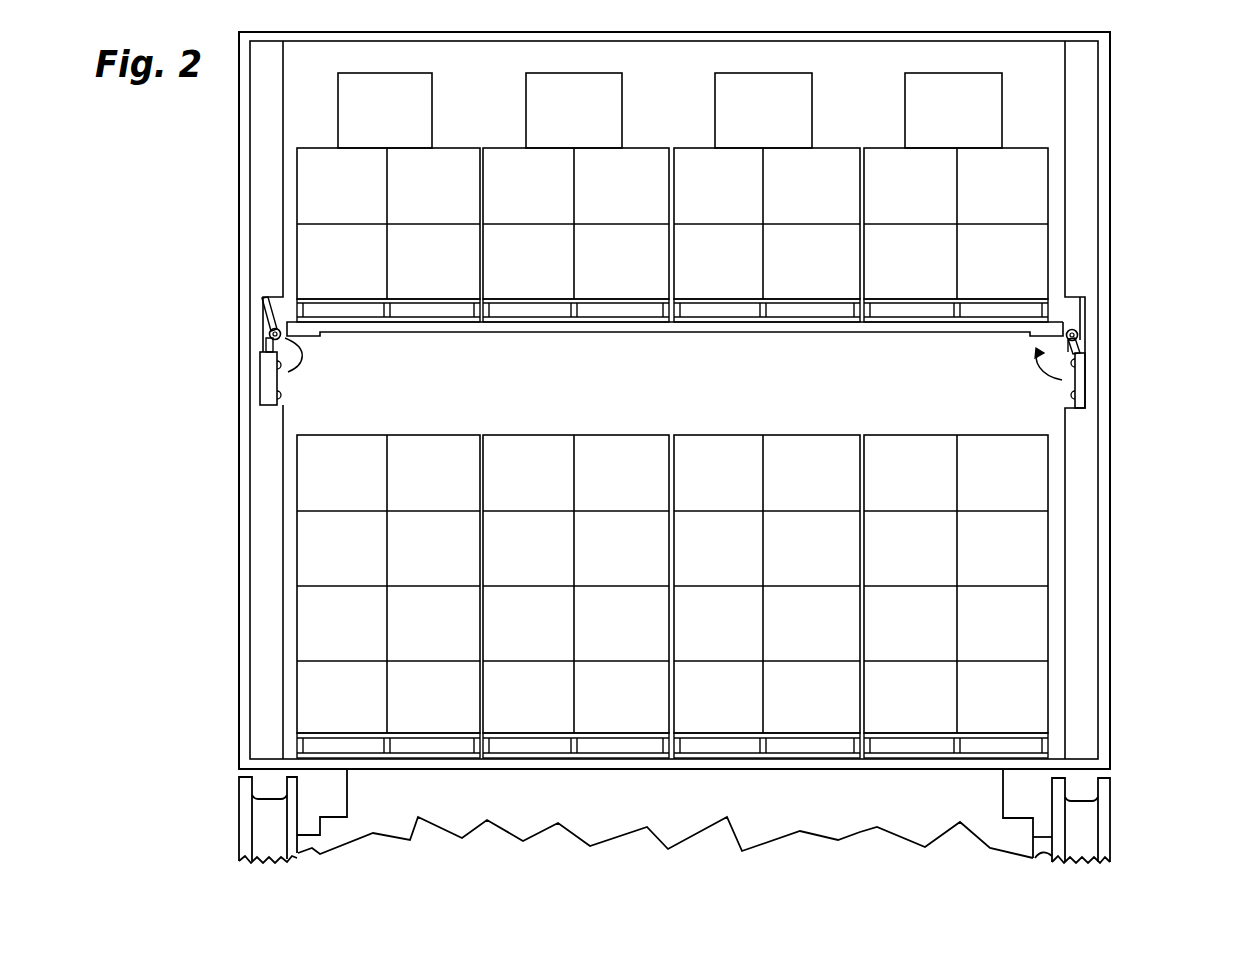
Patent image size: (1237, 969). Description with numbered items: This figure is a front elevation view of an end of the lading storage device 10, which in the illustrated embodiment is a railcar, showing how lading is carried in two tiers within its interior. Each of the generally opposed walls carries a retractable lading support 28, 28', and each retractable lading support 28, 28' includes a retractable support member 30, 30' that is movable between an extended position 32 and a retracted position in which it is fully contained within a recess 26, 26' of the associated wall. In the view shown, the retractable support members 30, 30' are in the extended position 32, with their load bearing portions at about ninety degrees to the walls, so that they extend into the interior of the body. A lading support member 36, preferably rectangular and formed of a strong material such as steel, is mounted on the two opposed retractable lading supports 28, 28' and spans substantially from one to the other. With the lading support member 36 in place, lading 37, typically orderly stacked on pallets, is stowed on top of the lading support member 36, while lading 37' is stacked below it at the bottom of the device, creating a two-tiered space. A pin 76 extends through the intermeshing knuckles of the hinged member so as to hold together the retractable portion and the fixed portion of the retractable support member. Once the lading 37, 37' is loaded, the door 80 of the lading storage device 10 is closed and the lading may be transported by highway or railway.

The lading storage device 10 is at (1126, 49).
The lading 37 is at (749, 197).
The lading 37' is at (756, 596).
The lading support member 36 is at (858, 334).
The retractable lading support 28 is at (1132, 313).
The retractable support member 30 is at (1112, 350).
The extended position 32 is at (1073, 352).
The recess 26 is at (1131, 391).
The pin 76 is at (272, 322).
The retractable lading support 28' is at (224, 332).
The retractable support member 30' is at (240, 376).
The recess 26' is at (231, 406).
The door 80 is at (1118, 823).